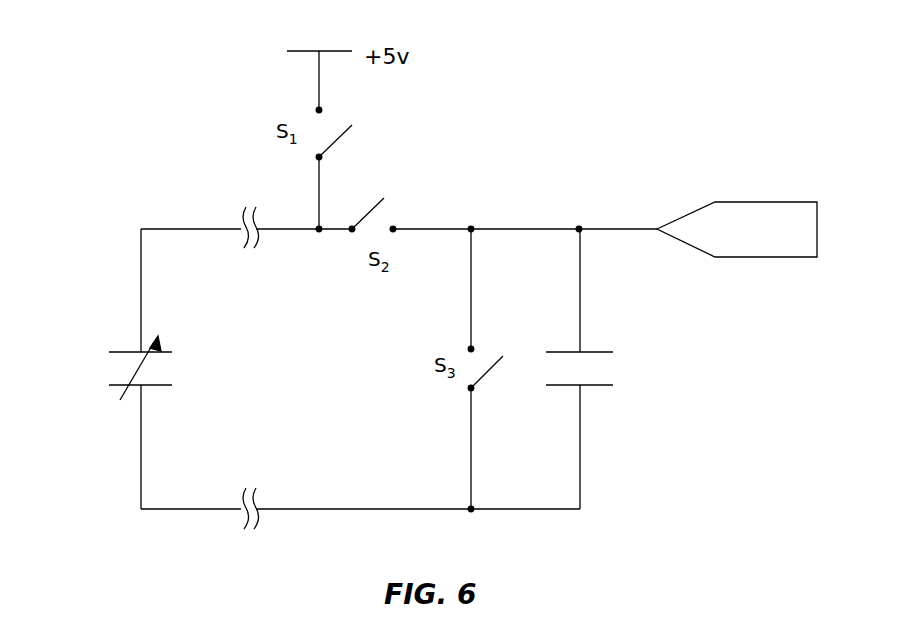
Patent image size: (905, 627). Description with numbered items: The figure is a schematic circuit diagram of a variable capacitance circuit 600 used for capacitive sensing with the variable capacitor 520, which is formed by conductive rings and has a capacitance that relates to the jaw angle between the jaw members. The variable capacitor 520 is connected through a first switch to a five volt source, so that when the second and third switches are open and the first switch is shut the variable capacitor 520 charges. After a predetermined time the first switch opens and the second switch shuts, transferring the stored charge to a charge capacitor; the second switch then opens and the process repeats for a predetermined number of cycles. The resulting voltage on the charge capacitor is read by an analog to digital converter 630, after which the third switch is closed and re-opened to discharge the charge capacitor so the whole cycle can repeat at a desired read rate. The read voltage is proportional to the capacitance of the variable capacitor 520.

The variable capacitance circuit 600 is at (587, 90).
The analog to digital converter 630 is at (757, 201).
The variable capacitor 520 is at (118, 371).